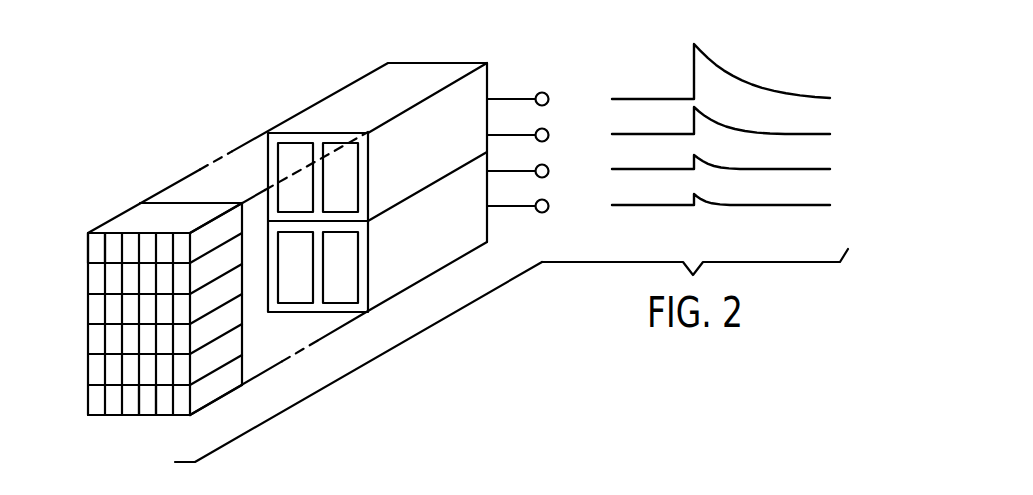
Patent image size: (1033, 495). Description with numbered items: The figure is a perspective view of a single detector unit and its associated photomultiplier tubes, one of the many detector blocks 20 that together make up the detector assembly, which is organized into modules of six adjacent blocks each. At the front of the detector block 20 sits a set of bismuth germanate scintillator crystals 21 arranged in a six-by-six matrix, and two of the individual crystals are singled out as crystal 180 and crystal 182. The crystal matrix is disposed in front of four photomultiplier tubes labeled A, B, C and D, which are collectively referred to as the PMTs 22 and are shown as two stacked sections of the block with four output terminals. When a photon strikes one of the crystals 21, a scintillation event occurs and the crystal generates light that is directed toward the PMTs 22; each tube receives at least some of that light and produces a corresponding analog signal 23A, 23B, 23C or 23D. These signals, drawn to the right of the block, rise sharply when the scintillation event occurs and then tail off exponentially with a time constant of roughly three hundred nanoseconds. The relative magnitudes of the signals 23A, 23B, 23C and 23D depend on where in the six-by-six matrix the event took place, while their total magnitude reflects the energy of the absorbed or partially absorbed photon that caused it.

The detector block 20 is at (292, 84).
The scintillator crystals 21 is at (82, 264).
The photomultiplier tubes 22 is at (439, 170).
The scintillator crystal 180 is at (90, 233).
The scintillator crystal 182 is at (150, 410).
The analog signal 23A is at (735, 74).
The analog signal 23B is at (711, 117).
The analog signal 23C is at (705, 161).
The analog signal 23D is at (703, 199).